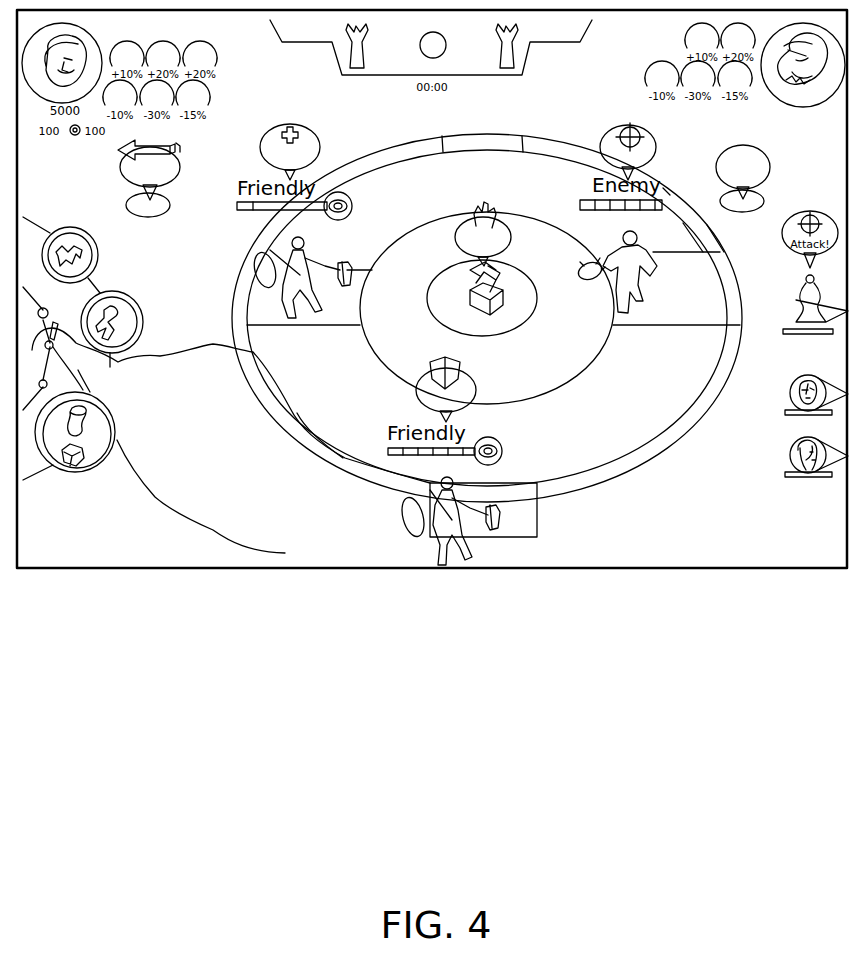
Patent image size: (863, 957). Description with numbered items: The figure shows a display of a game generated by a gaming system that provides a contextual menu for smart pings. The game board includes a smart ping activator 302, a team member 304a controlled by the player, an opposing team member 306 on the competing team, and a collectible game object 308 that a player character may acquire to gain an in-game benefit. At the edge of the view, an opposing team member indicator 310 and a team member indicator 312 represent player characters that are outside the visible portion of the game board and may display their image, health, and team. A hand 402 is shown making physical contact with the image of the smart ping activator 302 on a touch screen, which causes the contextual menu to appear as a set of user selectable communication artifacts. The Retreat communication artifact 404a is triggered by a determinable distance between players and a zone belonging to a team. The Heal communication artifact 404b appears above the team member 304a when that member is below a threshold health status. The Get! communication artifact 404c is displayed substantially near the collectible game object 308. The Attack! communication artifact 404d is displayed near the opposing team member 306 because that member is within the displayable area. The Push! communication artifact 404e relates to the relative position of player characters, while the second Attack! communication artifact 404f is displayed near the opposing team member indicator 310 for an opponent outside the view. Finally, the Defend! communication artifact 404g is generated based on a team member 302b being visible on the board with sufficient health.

The smart ping activator 302 is at (130, 366).
The team member 302b is at (430, 528).
The team member 304a is at (308, 258).
The opposing team member 306 is at (637, 280).
The collectible game object 308 is at (482, 315).
The opposing team member indicator 310 is at (752, 347).
The team member indicator 312 is at (790, 463).
The hand 402 is at (214, 487).
The Retreat communication artifact 404a is at (180, 169).
The Heal communication artifact 404b is at (320, 142).
The Get! communication artifact 404c is at (602, 262).
The Attack! communication artifact 404d is at (655, 148).
The Push! communication artifact 404e is at (770, 178).
The Attack! communication artifact 404f is at (660, 200).
The Defend! communication artifact 404g is at (416, 395).